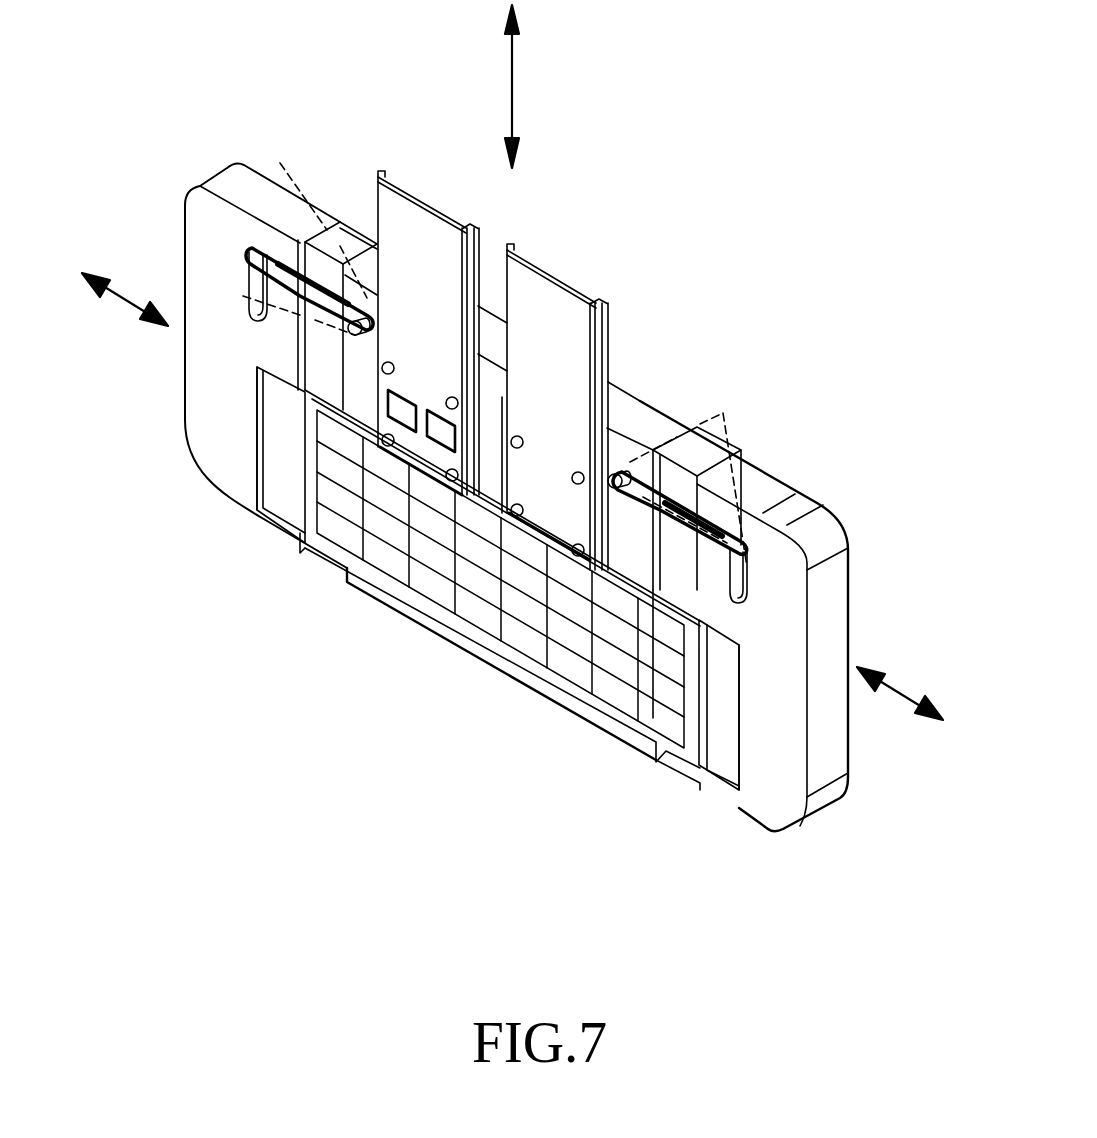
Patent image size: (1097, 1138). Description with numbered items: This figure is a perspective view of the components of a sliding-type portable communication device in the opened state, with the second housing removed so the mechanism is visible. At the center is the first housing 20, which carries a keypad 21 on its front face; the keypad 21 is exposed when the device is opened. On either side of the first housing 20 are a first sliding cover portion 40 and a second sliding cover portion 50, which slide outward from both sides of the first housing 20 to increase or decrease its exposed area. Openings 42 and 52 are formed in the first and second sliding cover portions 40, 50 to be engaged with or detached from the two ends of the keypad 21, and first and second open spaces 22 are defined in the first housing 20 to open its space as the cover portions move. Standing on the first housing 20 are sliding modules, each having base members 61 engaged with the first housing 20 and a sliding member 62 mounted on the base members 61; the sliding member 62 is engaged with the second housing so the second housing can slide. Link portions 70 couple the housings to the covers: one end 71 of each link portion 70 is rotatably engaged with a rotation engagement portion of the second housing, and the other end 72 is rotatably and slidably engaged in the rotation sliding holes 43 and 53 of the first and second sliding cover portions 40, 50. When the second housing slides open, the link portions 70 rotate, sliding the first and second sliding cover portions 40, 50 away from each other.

The first housing 20 is at (666, 427).
The keypad 21 is at (480, 620).
The open spaces 22 is at (284, 494).
The first sliding cover portion 40 is at (223, 335).
The opening 42 is at (272, 450).
The rotation sliding hole 43 is at (250, 298).
The second sliding cover portion 50 is at (787, 616).
The opening 52 is at (732, 703).
The rotation sliding hole 53 is at (747, 590).
The base member 61 is at (632, 458).
The sliding member 62 is at (418, 236).
The link portion 70 is at (577, 317).
The one end of link portion 71 is at (355, 265).
The other end of link portion 72 is at (252, 247).